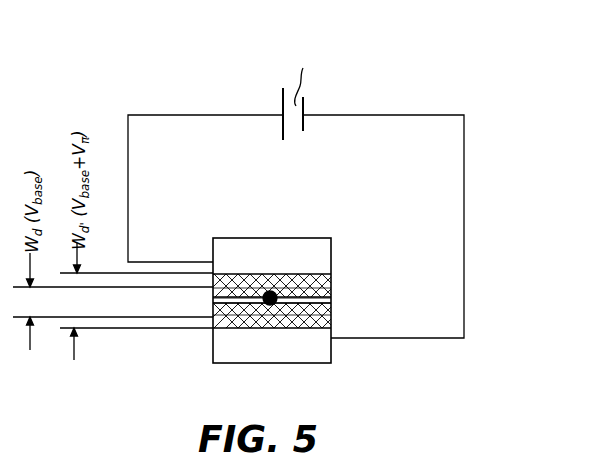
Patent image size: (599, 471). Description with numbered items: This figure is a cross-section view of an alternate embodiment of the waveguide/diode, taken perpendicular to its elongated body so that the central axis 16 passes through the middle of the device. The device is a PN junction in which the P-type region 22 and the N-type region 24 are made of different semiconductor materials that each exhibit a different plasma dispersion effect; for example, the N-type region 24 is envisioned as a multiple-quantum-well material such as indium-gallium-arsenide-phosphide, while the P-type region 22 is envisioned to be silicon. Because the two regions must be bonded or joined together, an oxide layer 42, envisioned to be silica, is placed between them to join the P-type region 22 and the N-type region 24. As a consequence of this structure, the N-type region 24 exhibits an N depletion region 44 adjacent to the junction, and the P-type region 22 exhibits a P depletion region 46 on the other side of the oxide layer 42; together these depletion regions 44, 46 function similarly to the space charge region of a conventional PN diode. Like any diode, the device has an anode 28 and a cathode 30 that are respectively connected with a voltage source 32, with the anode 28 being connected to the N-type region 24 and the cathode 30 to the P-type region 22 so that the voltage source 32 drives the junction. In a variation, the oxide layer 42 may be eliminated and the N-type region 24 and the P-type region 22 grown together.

The central axis 16 is at (260, 288).
The P-type region 22 is at (333, 358).
The N-type region 24 is at (333, 249).
The anode 28 is at (171, 262).
The cathode 30 is at (447, 339).
The voltage source 32 is at (276, 96).
The oxide layer 42 is at (264, 308).
The N depletion region 44 is at (333, 282).
The P depletion region 46 is at (333, 322).